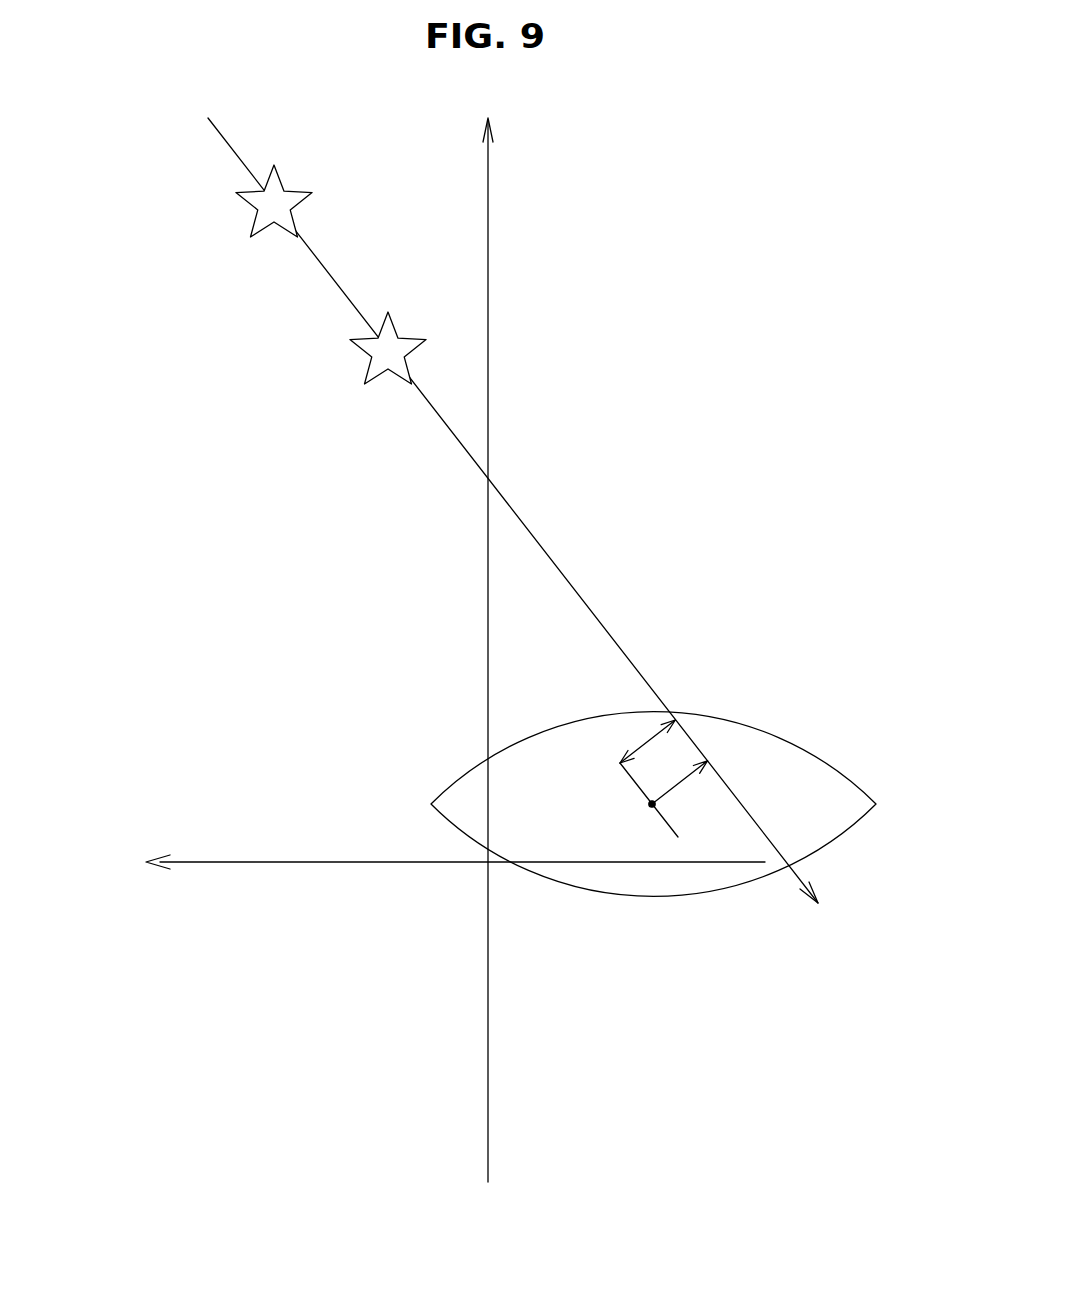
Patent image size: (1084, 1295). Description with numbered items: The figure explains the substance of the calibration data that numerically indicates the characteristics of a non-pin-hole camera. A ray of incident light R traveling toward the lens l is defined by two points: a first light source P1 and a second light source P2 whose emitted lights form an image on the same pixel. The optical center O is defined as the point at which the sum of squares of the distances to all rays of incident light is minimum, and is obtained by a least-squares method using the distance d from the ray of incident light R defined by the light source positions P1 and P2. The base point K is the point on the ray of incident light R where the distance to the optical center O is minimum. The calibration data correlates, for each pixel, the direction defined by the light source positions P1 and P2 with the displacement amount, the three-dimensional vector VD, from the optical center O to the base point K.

The first light source P1 is at (251, 211).
The second light source P2 is at (364, 357).
The ray of incident light R is at (320, 263).
The lens l is at (548, 878).
The distance d is at (649, 778).
The three-dimensional vector VD is at (673, 788).
The base point of the ray of incident light K is at (708, 761).
The optical center O is at (652, 804).